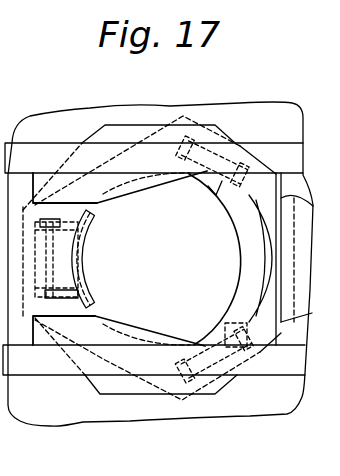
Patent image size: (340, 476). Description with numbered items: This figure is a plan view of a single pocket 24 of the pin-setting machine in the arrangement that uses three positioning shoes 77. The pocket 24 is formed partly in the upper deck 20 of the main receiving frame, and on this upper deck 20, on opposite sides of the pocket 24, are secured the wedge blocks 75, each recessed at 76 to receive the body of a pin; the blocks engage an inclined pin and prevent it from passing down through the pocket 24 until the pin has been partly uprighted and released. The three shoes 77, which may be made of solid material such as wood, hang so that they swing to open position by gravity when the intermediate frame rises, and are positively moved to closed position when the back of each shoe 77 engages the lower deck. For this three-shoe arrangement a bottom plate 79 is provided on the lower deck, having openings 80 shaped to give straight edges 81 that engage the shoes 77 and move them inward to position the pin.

The upper deck 20 is at (271, 146).
The pocket 24 is at (203, 259).
The wedge block 75 is at (124, 196).
The recess 76 is at (105, 194).
The shoe 77 is at (213, 197).
The bottom plate 79 is at (140, 416).
The opening 80 is at (152, 260).
The straight edge 81 is at (255, 172).